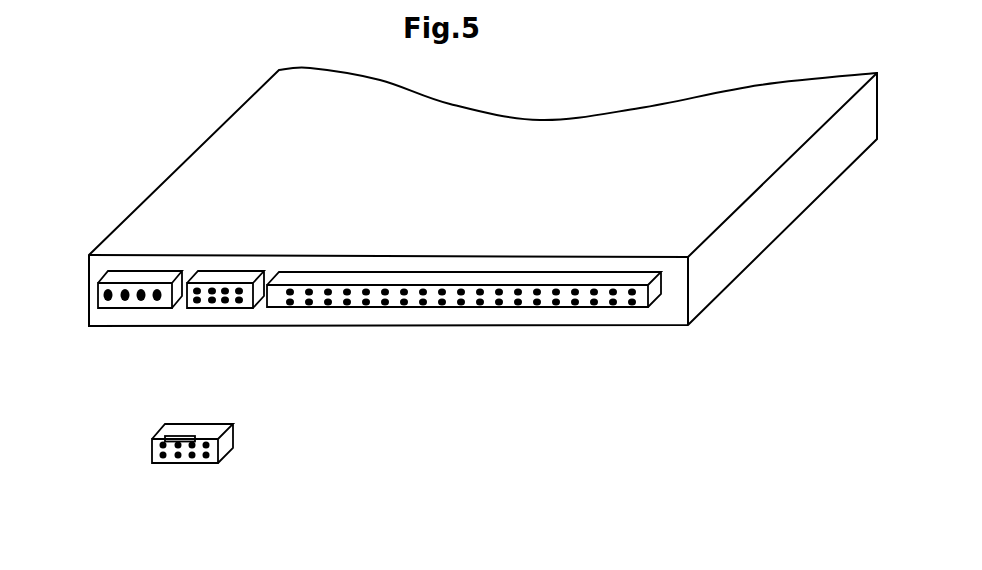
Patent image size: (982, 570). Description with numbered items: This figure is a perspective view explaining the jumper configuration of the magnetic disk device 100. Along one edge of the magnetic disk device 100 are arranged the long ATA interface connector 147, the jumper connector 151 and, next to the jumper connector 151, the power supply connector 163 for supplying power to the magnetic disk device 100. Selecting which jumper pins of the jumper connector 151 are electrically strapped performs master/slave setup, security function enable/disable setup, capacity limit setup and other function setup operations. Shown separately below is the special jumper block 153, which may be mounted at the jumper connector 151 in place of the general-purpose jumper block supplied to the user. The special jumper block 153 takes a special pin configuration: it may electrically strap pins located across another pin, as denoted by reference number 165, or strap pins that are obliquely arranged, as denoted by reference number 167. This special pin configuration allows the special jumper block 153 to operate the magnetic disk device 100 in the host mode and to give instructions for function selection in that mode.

The magnetic disk device 100 is at (483, 197).
The ATA interface connector 147 is at (266, 301).
The jumper connector 151 is at (187, 309).
The power supply connector 163 is at (98, 309).
The special jumper block 153 is at (190, 463).
The strapping of pins located across another pin 165 is at (183, 440).
The strapping of obliquely arranged pins 167 is at (186, 455).